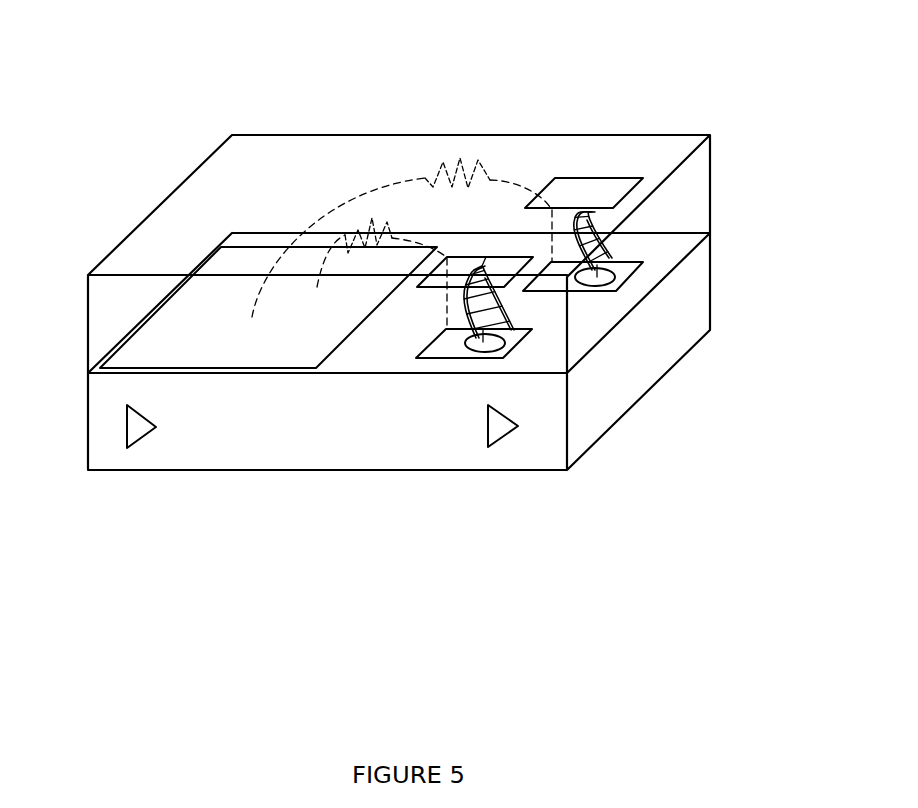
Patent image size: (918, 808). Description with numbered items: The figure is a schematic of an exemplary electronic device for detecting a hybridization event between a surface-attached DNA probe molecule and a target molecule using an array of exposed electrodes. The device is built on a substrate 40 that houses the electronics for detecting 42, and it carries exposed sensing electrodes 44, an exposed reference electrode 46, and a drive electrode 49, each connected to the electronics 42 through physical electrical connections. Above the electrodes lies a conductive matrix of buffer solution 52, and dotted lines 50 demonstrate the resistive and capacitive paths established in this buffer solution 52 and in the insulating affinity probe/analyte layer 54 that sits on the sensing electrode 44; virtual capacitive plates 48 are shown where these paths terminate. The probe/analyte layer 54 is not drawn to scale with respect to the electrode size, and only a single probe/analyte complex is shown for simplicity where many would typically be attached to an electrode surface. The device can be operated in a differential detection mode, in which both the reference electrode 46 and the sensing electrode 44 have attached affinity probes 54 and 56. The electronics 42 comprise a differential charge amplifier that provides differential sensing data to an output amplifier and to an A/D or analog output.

The substrate 40 is at (547, 457).
The electronics for detecting 42 is at (507, 440).
The sensing electrodes 44 is at (443, 340).
The reference electrode 46 is at (628, 277).
The virtual capacitive plates 48 is at (498, 258).
The drive electrode 49 is at (150, 330).
The dotted lines 50 is at (393, 193).
The buffer solution 52 is at (177, 223).
The affinity probe/analyte layer 54 is at (458, 292).
The affinity probes 56 is at (600, 220).